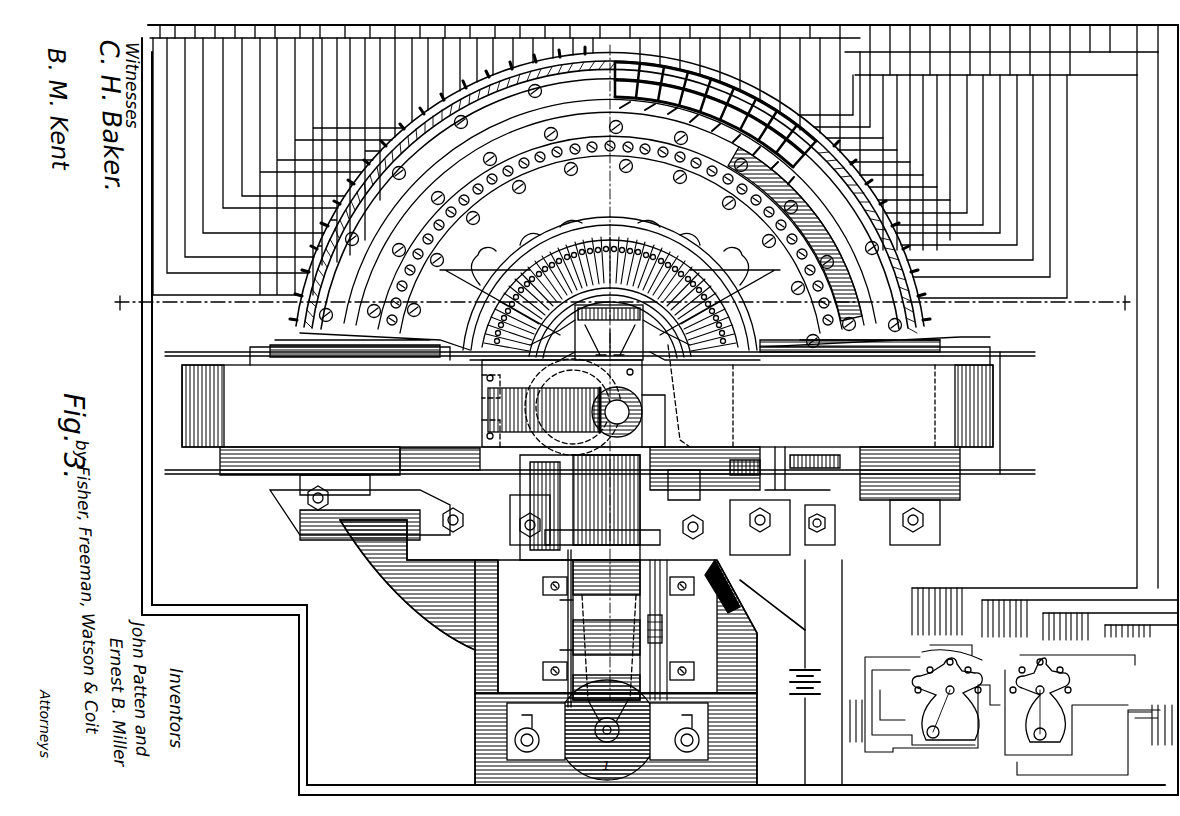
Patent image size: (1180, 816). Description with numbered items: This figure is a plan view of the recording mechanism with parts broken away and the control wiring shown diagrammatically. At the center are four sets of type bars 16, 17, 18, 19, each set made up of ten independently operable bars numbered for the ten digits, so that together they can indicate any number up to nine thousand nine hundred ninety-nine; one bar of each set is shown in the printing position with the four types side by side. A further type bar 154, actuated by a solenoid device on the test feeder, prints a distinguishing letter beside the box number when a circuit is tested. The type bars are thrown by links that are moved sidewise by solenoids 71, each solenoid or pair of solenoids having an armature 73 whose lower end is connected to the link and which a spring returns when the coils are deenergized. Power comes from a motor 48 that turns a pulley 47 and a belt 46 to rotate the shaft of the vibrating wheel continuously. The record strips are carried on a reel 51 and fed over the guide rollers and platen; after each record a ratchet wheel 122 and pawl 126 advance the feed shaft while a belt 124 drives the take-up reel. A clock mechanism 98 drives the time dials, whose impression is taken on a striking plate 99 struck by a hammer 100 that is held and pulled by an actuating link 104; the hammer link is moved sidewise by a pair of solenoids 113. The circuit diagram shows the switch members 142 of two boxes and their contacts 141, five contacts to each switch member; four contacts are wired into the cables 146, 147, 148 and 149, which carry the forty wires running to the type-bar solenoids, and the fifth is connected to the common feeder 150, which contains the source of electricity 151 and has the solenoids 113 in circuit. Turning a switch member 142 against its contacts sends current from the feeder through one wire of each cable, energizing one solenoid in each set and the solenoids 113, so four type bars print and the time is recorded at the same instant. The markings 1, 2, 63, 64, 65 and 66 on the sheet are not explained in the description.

The commutator ring 1 is at (610, 185).
The section line 2 is at (611, 299).
The set of type bars 16 is at (536, 283).
The set of type bars 17 is at (546, 278).
The set of type bars 18 is at (674, 279).
The set of type bars 19 is at (690, 283).
The belt 46 is at (618, 732).
The pulley 47 is at (596, 733).
The motor 48 is at (540, 725).
The reel 51 is at (216, 360).
The coil 63 is at (665, 600).
The ratchet 64 is at (670, 646).
The armature rod 65 is at (666, 625).
The bar end 66 is at (1005, 358).
The solenoids 71 is at (650, 104).
The armature 73 is at (712, 128).
The clock mechanism 98 is at (488, 404).
The striking plate 99 is at (632, 412).
The hammer 100 is at (578, 482).
The actuating link 104 is at (683, 440).
The pair of solenoids 113 is at (755, 615).
The ratchet wheel 122 is at (805, 455).
The belt 124 is at (870, 350).
The pawl 126 is at (752, 460).
The contacts 141 is at (930, 662).
The switch member 142 is at (942, 692).
The cable 146 is at (1137, 106).
The cable 147 is at (1158, 157).
The cable 148 is at (1178, 240).
The cable 149 is at (142, 262).
The common feeder 150 is at (152, 548).
The source of electricity 151 is at (790, 690).
The type bar 154 is at (540, 360).